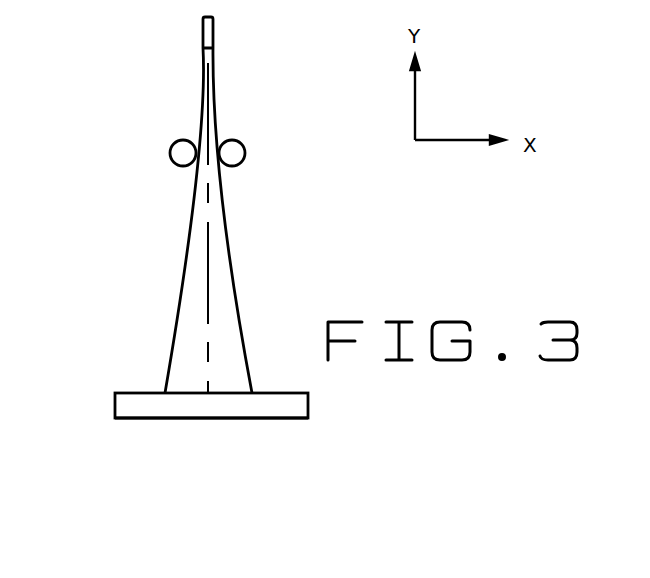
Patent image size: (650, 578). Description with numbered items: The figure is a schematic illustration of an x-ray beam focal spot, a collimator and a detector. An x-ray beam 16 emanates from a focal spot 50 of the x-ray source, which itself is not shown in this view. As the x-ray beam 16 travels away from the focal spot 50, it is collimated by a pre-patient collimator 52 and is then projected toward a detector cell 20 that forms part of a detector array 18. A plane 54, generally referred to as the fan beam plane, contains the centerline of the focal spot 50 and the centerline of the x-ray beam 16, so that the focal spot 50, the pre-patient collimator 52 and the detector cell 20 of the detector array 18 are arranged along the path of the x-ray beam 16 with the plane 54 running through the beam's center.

The x-ray beam 16 is at (237, 277).
The detector array 18 is at (124, 437).
The detector cell 20 is at (130, 408).
The focal spot 50 is at (213, 24).
The pre-patient collimator 52 is at (240, 96).
The plane 54 is at (213, 230).